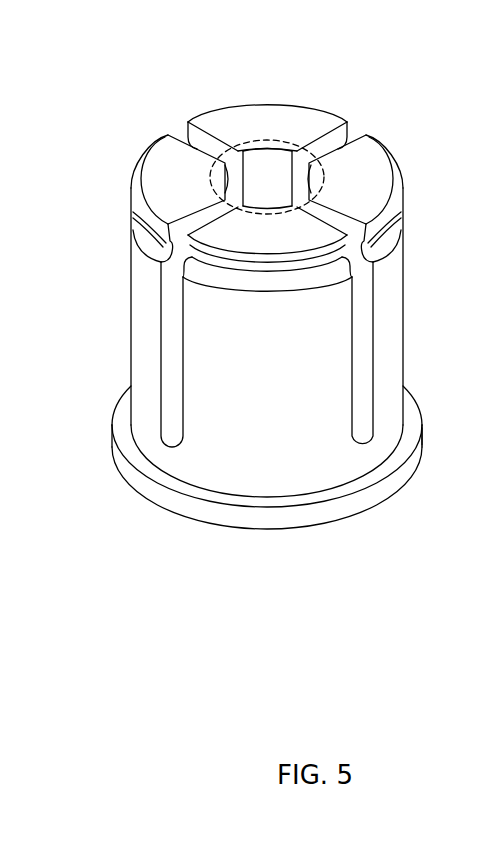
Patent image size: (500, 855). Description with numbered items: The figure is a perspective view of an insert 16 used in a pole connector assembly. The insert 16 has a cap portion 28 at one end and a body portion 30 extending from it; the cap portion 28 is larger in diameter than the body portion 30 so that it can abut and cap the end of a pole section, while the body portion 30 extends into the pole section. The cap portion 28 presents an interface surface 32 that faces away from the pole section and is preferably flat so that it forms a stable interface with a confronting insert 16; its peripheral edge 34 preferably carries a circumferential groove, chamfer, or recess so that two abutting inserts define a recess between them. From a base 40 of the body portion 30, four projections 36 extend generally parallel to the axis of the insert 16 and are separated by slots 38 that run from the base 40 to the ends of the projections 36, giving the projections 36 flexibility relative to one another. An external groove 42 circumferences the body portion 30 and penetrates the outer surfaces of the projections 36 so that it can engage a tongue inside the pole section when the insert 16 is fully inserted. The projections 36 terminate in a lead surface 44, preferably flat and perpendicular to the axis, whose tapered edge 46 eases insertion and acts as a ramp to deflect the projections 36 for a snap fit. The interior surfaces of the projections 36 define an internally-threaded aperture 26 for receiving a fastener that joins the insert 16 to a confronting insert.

The insert 16 is at (408, 318).
The aperture 26 is at (267, 175).
The cap portion 28 is at (363, 497).
The body portion 30 is at (406, 357).
The interface surface 32 is at (273, 531).
The peripheral edge 34 is at (423, 440).
The projections 36 is at (240, 120).
The slots 38 is at (178, 112).
The base 40 is at (210, 477).
The external groove 42 is at (135, 220).
The lead surface 44 is at (154, 168).
The tapered edge 46 is at (137, 192).